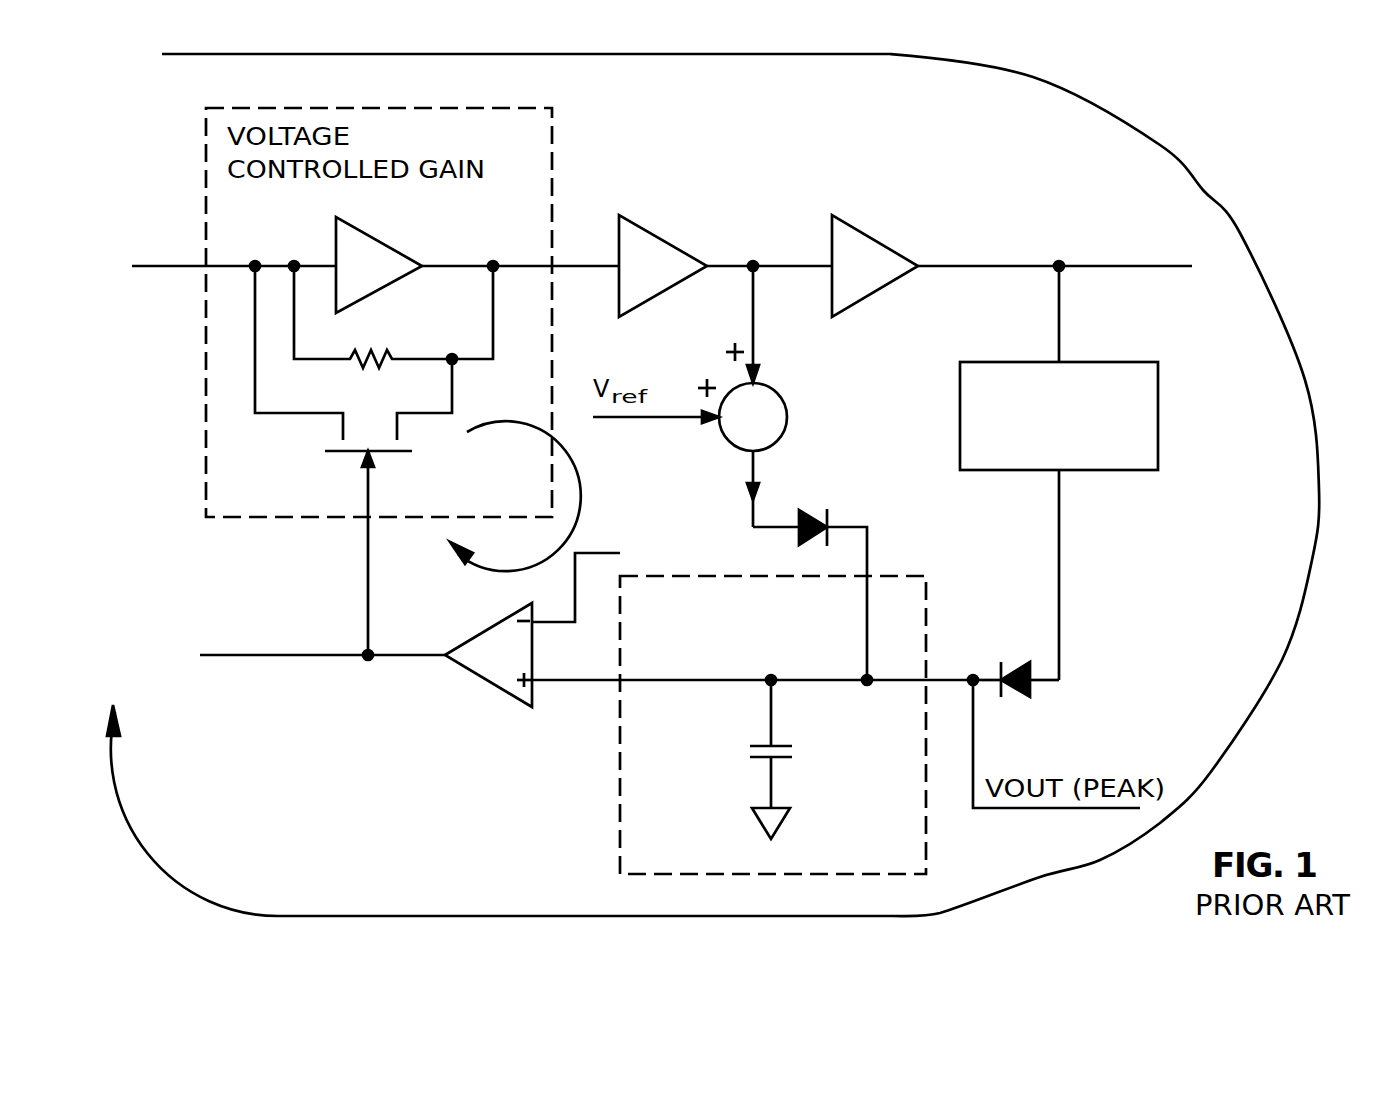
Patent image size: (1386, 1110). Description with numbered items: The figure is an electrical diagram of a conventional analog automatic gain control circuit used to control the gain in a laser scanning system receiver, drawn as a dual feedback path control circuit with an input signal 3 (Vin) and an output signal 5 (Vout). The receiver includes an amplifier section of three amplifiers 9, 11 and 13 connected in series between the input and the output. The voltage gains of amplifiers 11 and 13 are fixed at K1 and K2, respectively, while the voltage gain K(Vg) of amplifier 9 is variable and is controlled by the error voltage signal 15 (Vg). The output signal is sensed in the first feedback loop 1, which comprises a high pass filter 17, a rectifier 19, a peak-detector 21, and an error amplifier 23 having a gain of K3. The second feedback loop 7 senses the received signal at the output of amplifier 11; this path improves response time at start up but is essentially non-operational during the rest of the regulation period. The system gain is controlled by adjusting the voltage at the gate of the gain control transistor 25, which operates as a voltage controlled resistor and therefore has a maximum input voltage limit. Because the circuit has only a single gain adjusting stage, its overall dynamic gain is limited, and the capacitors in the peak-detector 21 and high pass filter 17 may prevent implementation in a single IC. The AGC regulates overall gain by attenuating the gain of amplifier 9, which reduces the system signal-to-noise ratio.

The first feedback loop 1 is at (1160, 145).
The input signal 3 is at (175, 266).
The output signal 5 is at (1100, 266).
The second feedback loop 7 is at (532, 562).
The amplifier 9 is at (373, 237).
The amplifier 11 is at (670, 238).
The amplifier 13 is at (877, 235).
The error voltage signal 15 is at (367, 568).
The high pass filter 17 is at (1158, 412).
The rectifier 19 is at (1027, 690).
The peak-detector 21 is at (940, 600).
The error amplifier 23 is at (480, 678).
The gain control transistor 25 is at (350, 452).